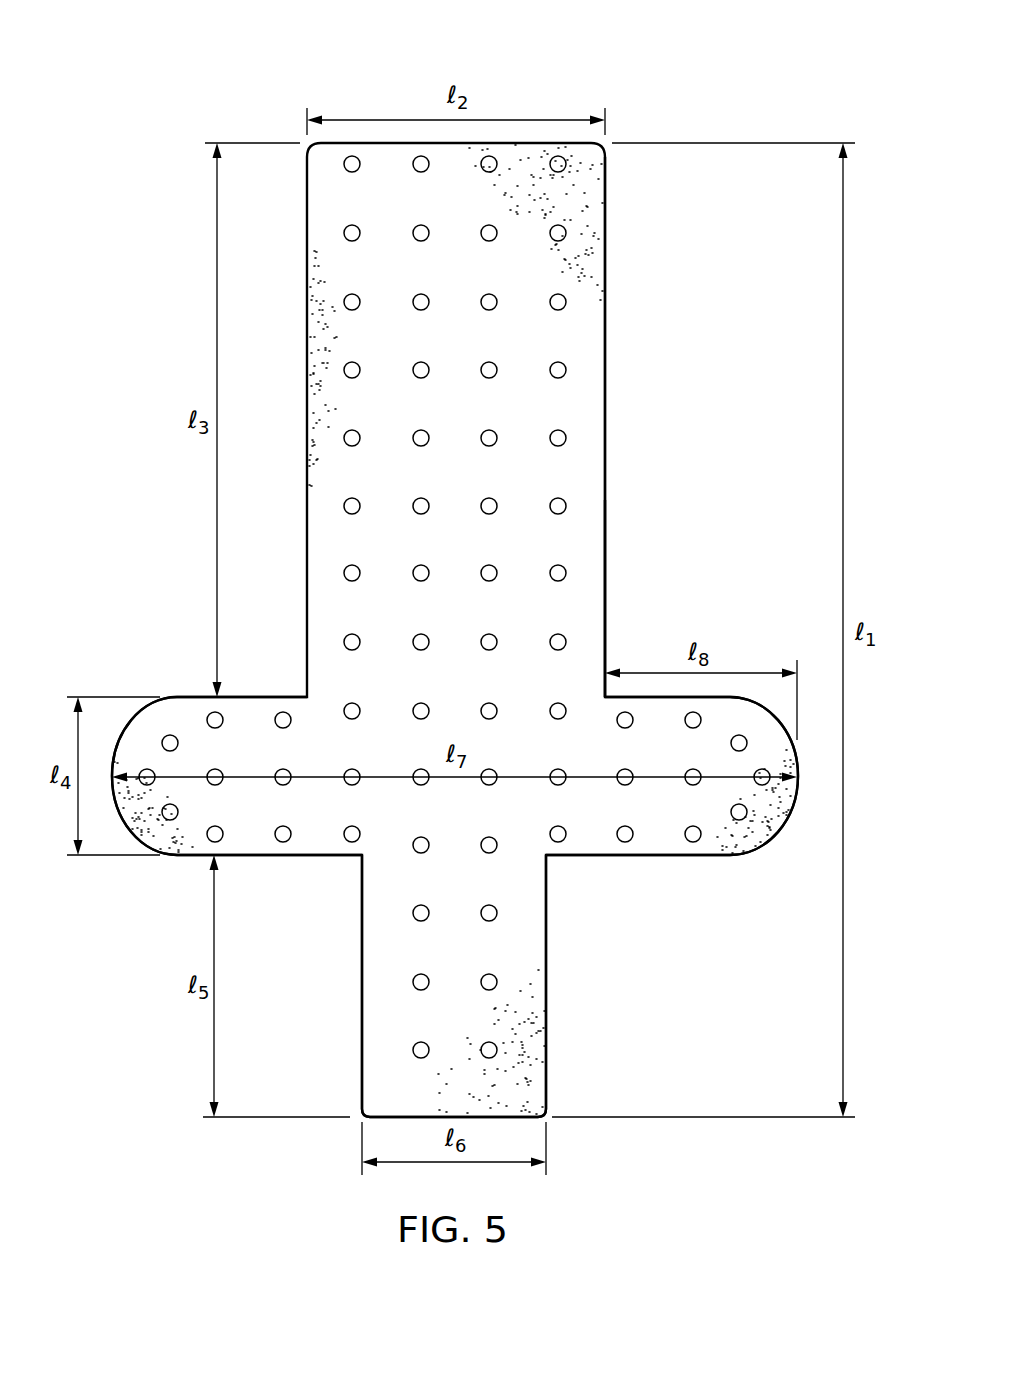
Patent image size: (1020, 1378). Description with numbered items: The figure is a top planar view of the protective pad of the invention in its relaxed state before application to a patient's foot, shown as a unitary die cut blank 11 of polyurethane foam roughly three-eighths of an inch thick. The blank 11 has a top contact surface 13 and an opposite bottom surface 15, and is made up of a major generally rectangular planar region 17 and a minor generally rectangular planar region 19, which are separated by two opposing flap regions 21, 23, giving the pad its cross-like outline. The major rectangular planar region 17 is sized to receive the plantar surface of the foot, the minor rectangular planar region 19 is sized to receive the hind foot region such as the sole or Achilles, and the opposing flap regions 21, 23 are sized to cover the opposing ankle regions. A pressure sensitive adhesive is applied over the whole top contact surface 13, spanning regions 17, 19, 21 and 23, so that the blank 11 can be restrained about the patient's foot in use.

The blank 11 is at (663, 66).
The top contact surface 13 is at (598, 480).
The bottom surface 15 is at (606, 536).
The major rectangular planar region 17 is at (540, 344).
The minor rectangular planar region 19 is at (370, 952).
The flap region 21 is at (657, 851).
The flap region 23 is at (263, 705).